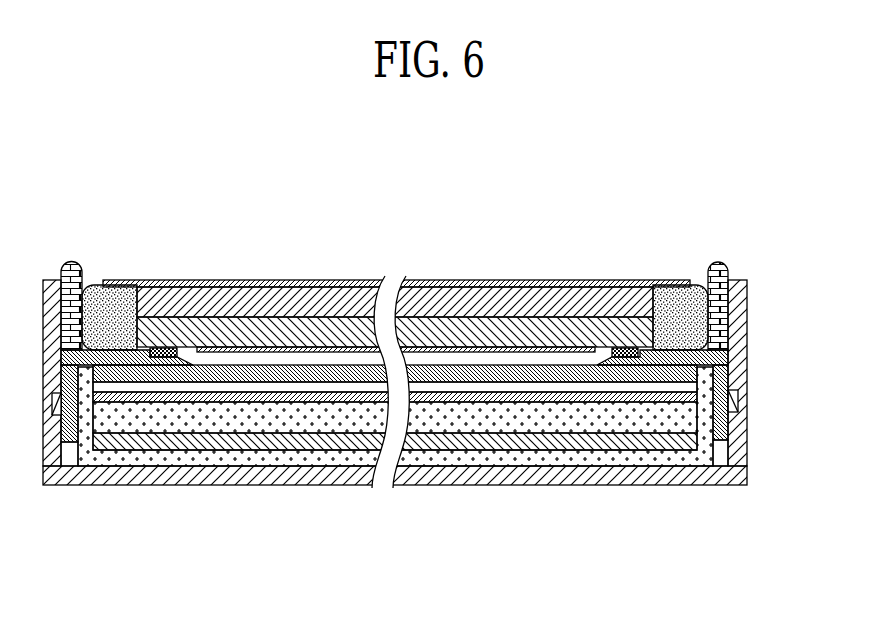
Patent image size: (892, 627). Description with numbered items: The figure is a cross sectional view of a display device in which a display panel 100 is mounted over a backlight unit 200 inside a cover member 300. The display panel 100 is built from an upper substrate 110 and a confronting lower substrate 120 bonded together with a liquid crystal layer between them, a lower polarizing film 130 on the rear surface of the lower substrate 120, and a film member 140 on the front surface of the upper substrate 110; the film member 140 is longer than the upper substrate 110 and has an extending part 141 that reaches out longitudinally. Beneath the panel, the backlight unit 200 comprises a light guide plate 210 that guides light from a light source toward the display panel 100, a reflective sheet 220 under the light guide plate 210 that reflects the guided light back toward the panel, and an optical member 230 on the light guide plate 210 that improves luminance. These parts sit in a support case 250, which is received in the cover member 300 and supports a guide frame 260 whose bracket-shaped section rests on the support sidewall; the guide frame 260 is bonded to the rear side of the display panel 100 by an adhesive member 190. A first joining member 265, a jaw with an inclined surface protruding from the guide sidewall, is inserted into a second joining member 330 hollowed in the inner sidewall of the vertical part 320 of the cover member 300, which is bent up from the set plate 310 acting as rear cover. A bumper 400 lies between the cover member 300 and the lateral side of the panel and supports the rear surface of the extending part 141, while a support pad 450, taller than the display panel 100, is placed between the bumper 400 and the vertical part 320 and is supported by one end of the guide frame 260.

The display panel 100 is at (598, 147).
The upper substrate 110 is at (457, 326).
The lower substrate 120 is at (487, 346).
The lower polarizing film 130 is at (520, 308).
The film member 140 is at (433, 292).
The extending part 141 is at (130, 288).
The adhesive member 190 is at (625, 347).
The backlight unit 200 is at (258, 548).
The light guide plate 210 is at (220, 418).
The reflective sheet 220 is at (250, 440).
The optical member 230 is at (158, 371).
The support case 250 is at (480, 457).
The guide frame 260 is at (56, 396).
The first joining member 265 is at (735, 384).
The cover member 300 is at (800, 433).
The set plate 310 is at (700, 478).
The vertical part 320 is at (742, 450).
The second joining member 330 is at (740, 405).
The bumper 400 is at (670, 307).
The support pad 450 is at (722, 262).